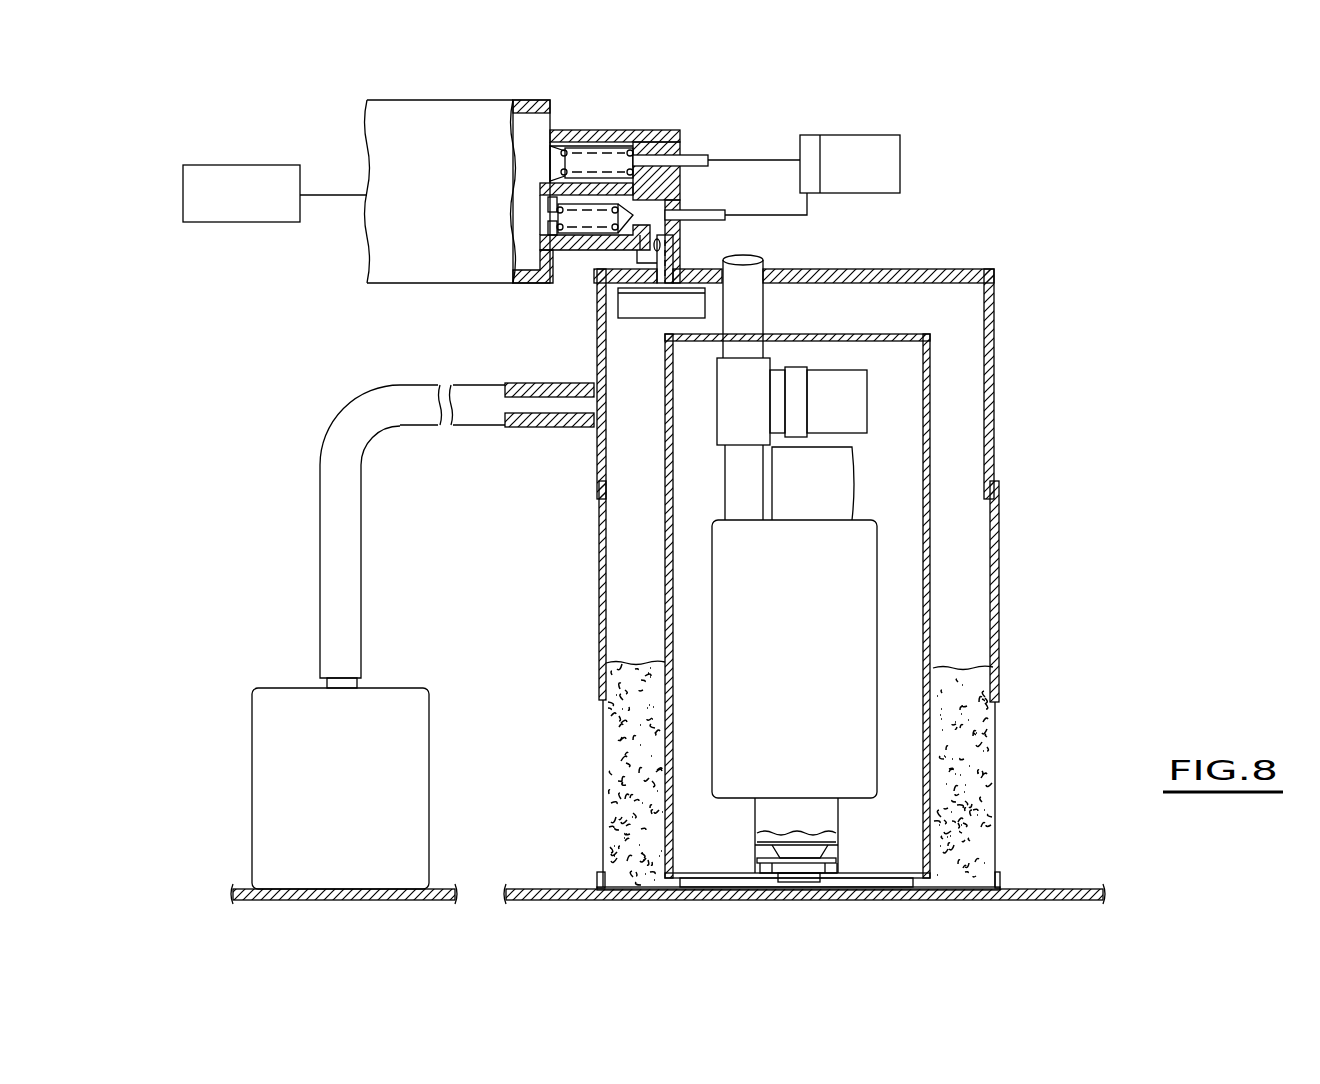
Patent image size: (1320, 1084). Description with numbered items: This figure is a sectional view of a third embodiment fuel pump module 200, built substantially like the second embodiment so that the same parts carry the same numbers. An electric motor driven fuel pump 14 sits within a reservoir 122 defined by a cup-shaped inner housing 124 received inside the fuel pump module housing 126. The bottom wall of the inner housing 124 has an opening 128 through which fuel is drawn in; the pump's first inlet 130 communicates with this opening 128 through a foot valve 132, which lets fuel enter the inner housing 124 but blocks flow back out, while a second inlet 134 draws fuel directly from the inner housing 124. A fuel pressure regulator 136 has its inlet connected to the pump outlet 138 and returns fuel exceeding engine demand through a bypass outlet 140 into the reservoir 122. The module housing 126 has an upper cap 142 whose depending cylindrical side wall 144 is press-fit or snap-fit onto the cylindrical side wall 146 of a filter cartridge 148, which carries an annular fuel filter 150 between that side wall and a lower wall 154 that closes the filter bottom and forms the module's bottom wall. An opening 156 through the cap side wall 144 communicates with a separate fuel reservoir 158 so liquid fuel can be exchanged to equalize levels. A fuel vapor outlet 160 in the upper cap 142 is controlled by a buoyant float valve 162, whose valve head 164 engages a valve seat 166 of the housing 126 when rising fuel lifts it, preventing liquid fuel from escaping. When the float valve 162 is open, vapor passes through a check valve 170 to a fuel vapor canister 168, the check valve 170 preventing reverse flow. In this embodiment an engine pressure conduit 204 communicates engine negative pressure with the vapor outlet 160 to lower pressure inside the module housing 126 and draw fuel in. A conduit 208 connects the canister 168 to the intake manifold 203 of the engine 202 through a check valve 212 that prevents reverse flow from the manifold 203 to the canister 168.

The fuel pump 14 is at (869, 658).
The reservoir 122 is at (910, 577).
The inner housing 124 is at (930, 548).
The fuel pump module housing 126 is at (997, 457).
The opening 128 is at (790, 878).
The first inlet 130 is at (807, 850).
The foot valve 132 is at (767, 867).
The second inlet 134 is at (840, 862).
The fuel pressure regulator 136 is at (830, 373).
The outlet 138 is at (733, 492).
The bypass outlet 140 is at (869, 397).
The upper cap 142 is at (952, 269).
The side wall 144 is at (999, 303).
The side wall 146 is at (999, 508).
The filter cartridge 148 is at (1001, 580).
The fuel filter 150 is at (995, 715).
The lower wall 154 is at (1003, 878).
The opening 156 is at (597, 405).
The fuel reservoir 158 is at (421, 725).
The fuel vapor outlet 160 is at (655, 285).
The float valve 162 is at (616, 313).
The valve head 164 is at (687, 242).
The valve seat 166 is at (653, 253).
The fuel vapor canister 168 is at (222, 165).
The check valve 170 is at (632, 212).
The fuel pump module 200 is at (1082, 321).
The engine 202 is at (895, 143).
The intake manifold 203 is at (805, 137).
The engine pressure conduit 204 is at (810, 208).
The conduit 208 is at (690, 152).
The check valve 212 is at (550, 162).